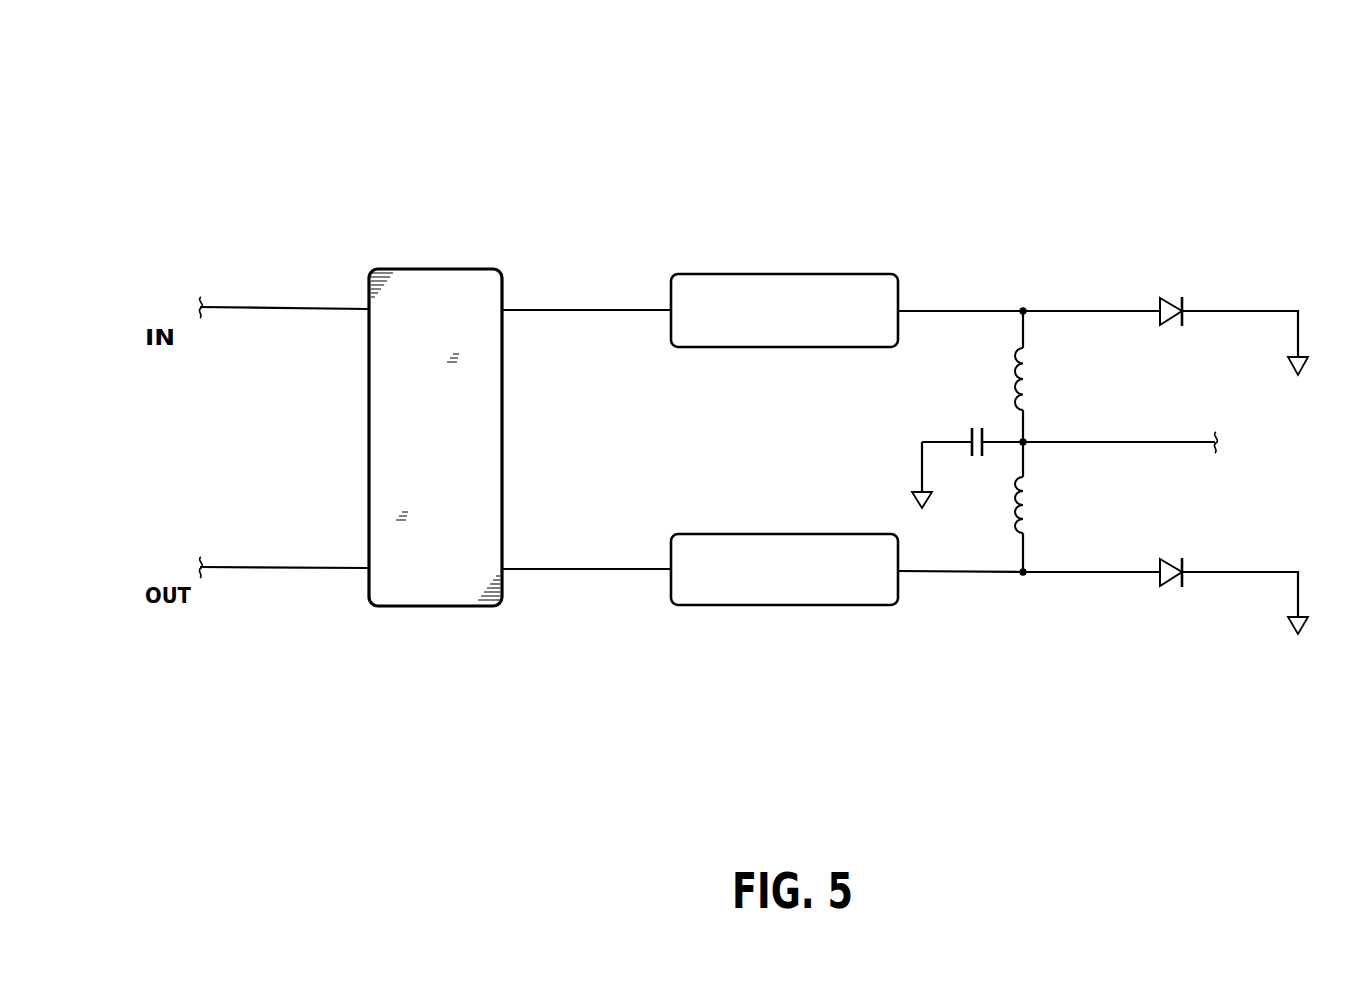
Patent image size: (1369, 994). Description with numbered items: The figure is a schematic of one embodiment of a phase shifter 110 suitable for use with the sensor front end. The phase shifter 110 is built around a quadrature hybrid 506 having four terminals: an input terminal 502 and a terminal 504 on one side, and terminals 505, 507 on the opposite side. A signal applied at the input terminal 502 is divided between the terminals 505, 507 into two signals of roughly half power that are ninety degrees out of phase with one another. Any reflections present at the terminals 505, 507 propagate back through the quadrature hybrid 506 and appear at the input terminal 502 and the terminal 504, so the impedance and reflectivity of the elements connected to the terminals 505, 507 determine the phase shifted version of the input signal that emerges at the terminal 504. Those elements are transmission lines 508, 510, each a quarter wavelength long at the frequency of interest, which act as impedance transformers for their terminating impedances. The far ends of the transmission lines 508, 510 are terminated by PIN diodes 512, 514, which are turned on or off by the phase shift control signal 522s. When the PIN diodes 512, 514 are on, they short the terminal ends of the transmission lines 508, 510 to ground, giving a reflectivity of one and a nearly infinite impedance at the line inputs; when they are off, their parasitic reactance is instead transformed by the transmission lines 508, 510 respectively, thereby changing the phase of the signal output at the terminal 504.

The phase shifter 110 is at (1078, 160).
The input terminal 502 is at (287, 306).
The terminal 504 is at (303, 566).
The terminal 505 is at (506, 312).
The quadrature hybrid 506 is at (480, 267).
The terminal 507 is at (506, 572).
The transmission line 508 is at (716, 348).
The transmission line 510 is at (716, 606).
The PIN diode 512 is at (1167, 297).
The PIN diode 514 is at (1167, 586).
The phase shift control signal 522s is at (1217, 438).